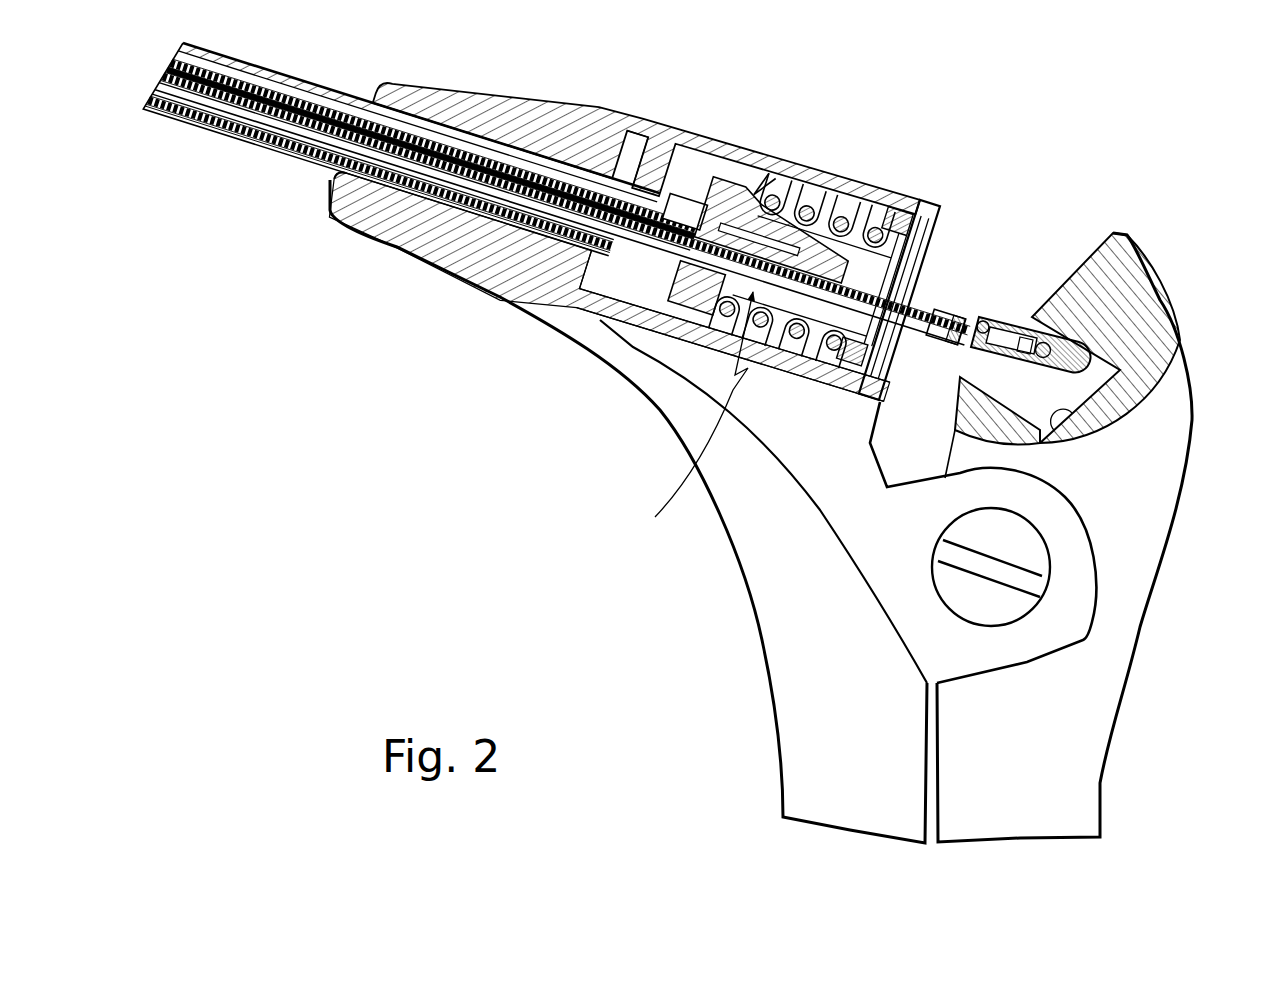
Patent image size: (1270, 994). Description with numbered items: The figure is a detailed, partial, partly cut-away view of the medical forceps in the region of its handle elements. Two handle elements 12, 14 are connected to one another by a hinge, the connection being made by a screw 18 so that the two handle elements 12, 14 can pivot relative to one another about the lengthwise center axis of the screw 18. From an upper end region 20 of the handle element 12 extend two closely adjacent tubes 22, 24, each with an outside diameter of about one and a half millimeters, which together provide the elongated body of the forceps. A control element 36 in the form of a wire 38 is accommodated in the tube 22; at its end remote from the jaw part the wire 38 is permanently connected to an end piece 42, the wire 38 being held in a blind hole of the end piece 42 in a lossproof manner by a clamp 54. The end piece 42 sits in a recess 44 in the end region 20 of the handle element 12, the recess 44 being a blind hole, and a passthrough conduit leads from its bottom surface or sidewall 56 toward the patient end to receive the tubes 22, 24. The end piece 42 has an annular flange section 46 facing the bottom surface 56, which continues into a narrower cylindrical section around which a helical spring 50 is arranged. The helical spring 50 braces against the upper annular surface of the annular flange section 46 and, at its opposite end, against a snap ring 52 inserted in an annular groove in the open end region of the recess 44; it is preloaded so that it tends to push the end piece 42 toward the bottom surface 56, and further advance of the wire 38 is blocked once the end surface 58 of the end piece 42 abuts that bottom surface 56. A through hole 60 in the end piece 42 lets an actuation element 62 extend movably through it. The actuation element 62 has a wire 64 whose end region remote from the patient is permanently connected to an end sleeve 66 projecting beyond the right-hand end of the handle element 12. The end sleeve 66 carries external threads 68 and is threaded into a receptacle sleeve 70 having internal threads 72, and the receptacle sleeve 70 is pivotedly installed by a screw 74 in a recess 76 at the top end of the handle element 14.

The handle element 12 is at (800, 625).
The handle element 14 is at (1073, 650).
The screw 18 is at (1033, 553).
The upper end region 20 is at (580, 127).
The tube 22 is at (502, 127).
The tube 24 is at (403, 187).
The control element 36 is at (655, 180).
The wire 38 is at (388, 127).
The end piece 42 is at (713, 350).
The recess 44 is at (733, 190).
The annular flange section 46 is at (768, 185).
The helical spring 50 is at (807, 190).
The snap ring 52 is at (912, 205).
The clamp 54 is at (690, 205).
The bottom surface 56 is at (610, 272).
The end surface 58 is at (688, 303).
The through hole 60 is at (812, 340).
The actuation element 62 is at (688, 417).
The wire 64 is at (307, 143).
The end sleeve 66 is at (955, 312).
The external threads 68 is at (981, 318).
The receptacle sleeve 70 is at (1030, 305).
The internal threads 72 is at (1050, 300).
The screw 74 is at (1113, 285).
The recess 76 is at (1135, 395).